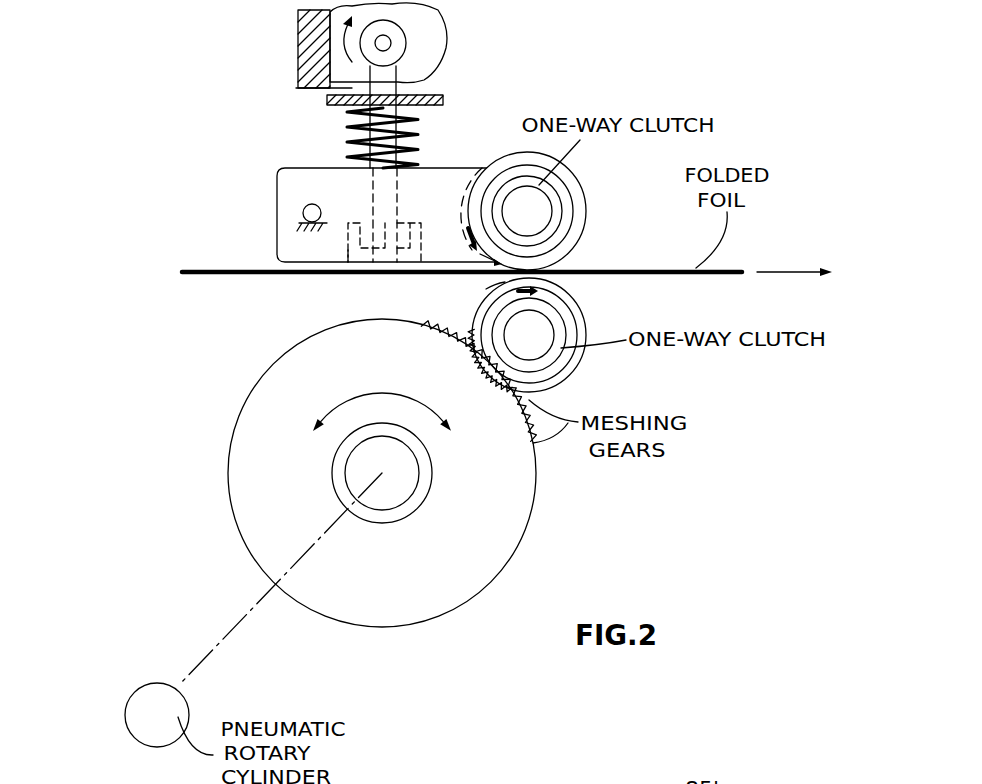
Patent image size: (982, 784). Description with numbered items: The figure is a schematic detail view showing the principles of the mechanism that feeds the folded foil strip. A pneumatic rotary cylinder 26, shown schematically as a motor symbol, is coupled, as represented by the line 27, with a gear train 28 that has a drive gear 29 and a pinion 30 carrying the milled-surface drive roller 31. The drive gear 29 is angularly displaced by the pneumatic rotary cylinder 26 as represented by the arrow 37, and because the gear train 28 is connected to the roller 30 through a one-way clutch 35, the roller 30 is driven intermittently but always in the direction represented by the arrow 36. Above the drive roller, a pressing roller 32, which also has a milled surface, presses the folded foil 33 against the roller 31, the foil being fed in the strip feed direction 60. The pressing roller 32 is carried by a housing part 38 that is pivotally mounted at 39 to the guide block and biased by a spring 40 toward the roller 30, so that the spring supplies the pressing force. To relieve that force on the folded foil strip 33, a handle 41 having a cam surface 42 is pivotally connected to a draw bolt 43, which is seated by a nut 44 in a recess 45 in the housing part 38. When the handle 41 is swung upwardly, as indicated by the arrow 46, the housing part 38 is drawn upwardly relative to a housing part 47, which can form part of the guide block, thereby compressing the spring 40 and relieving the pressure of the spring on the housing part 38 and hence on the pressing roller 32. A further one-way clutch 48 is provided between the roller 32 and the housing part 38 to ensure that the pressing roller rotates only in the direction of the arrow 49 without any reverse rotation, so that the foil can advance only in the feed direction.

The pneumatic rotary cylinder 26 is at (138, 695).
The line 27 is at (223, 656).
The gear train 28 is at (556, 487).
The drive gear 29 is at (268, 511).
The pinion 30 is at (581, 366).
The milled-surface drive roller 31 is at (574, 290).
The pressing roller 32 is at (584, 237).
The folded foil 33 is at (708, 277).
The one-way clutch 35 is at (567, 320).
The arrow 36 is at (486, 287).
The arrow 37 is at (382, 393).
The housing part 38 is at (294, 189).
The pivot 39 is at (304, 212).
The spring 40 is at (418, 128).
The handle 41 is at (300, 76).
The cam surface 42 is at (447, 33).
The draw bolt 43 is at (345, 137).
The nut 44 is at (348, 262).
The recess 45 is at (377, 215).
The arrow 46 is at (342, 33).
The housing part 47 is at (327, 100).
The one-way clutch 48 is at (556, 203).
The arrow 49 is at (467, 209).
The strip feed direction 60 is at (786, 271).